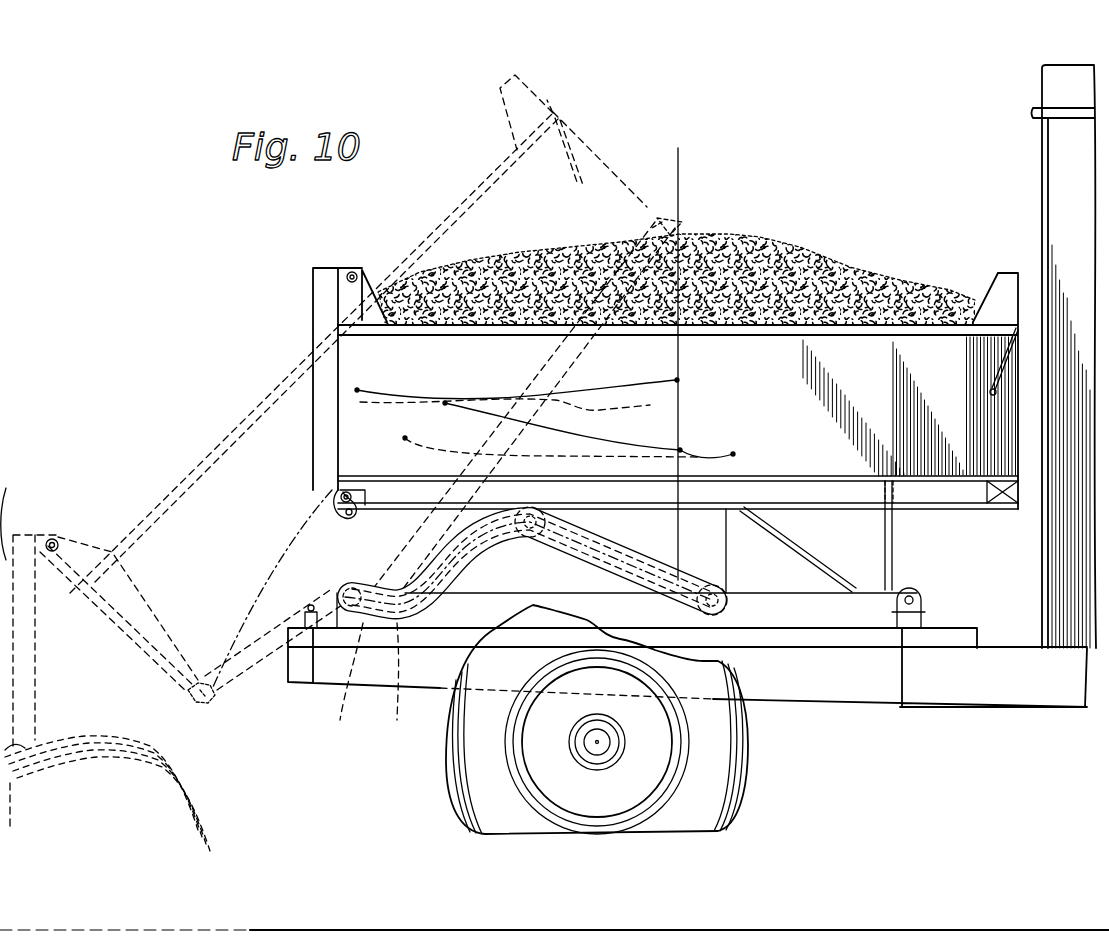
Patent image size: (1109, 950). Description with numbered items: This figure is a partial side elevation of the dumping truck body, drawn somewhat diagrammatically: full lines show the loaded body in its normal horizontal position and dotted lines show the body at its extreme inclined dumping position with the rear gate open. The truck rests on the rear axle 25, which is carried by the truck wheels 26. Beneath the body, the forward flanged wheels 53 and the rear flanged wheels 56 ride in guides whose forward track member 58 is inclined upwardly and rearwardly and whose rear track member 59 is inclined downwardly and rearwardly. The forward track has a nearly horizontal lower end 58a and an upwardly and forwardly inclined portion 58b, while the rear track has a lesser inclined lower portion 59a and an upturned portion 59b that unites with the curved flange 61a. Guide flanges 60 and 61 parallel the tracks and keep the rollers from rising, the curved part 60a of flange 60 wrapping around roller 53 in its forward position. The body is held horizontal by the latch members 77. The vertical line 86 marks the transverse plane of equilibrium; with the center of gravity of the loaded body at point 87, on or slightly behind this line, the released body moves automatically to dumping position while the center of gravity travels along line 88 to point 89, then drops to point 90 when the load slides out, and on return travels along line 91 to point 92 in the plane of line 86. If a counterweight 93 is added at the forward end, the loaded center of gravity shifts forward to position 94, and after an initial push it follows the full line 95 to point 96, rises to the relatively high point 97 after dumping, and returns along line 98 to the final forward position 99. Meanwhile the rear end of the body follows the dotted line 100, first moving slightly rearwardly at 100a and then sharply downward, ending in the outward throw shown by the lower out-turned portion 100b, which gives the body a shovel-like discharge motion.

The rear axle 25 is at (597, 740).
The truck wheels 26 is at (750, 765).
The flanged wheels 53 is at (548, 523).
The flanged wheels 56 is at (528, 563).
The forward track member 58 is at (657, 541).
The lower forward end of forward track member 58a is at (678, 623).
The upwardly and forwardly inclined portion of forward track 58b is at (738, 624).
The rear track member 59 is at (433, 555).
The lower portion of rear track member 59a is at (397, 676).
The upwardly and rearwardly inclined portion of rear track 59b is at (340, 705).
The guide flange 60 is at (643, 578).
The curved part of guide flange 60a is at (732, 601).
The guide flange 61 is at (453, 553).
The curved flange 61a is at (352, 594).
The latch members 77 is at (866, 586).
The vertical line 86 is at (678, 357).
The point 87 is at (677, 380).
The line 88 is at (563, 392).
The point 89 is at (356, 391).
The point 90 is at (405, 438).
The line 91 is at (497, 456).
The point 92 is at (680, 450).
The counterweight 93 is at (683, 222).
The position 94 is at (678, 380).
The full line 95 is at (467, 395).
The point 96 is at (356, 390).
The point 97 is at (445, 404).
The line 98 is at (563, 437).
The final forward position 99 is at (734, 454).
The dotted line 100 is at (266, 550).
The initial rearward portion of line 100 100a is at (337, 485).
The lower out-turned portion of line 100 100b is at (188, 702).